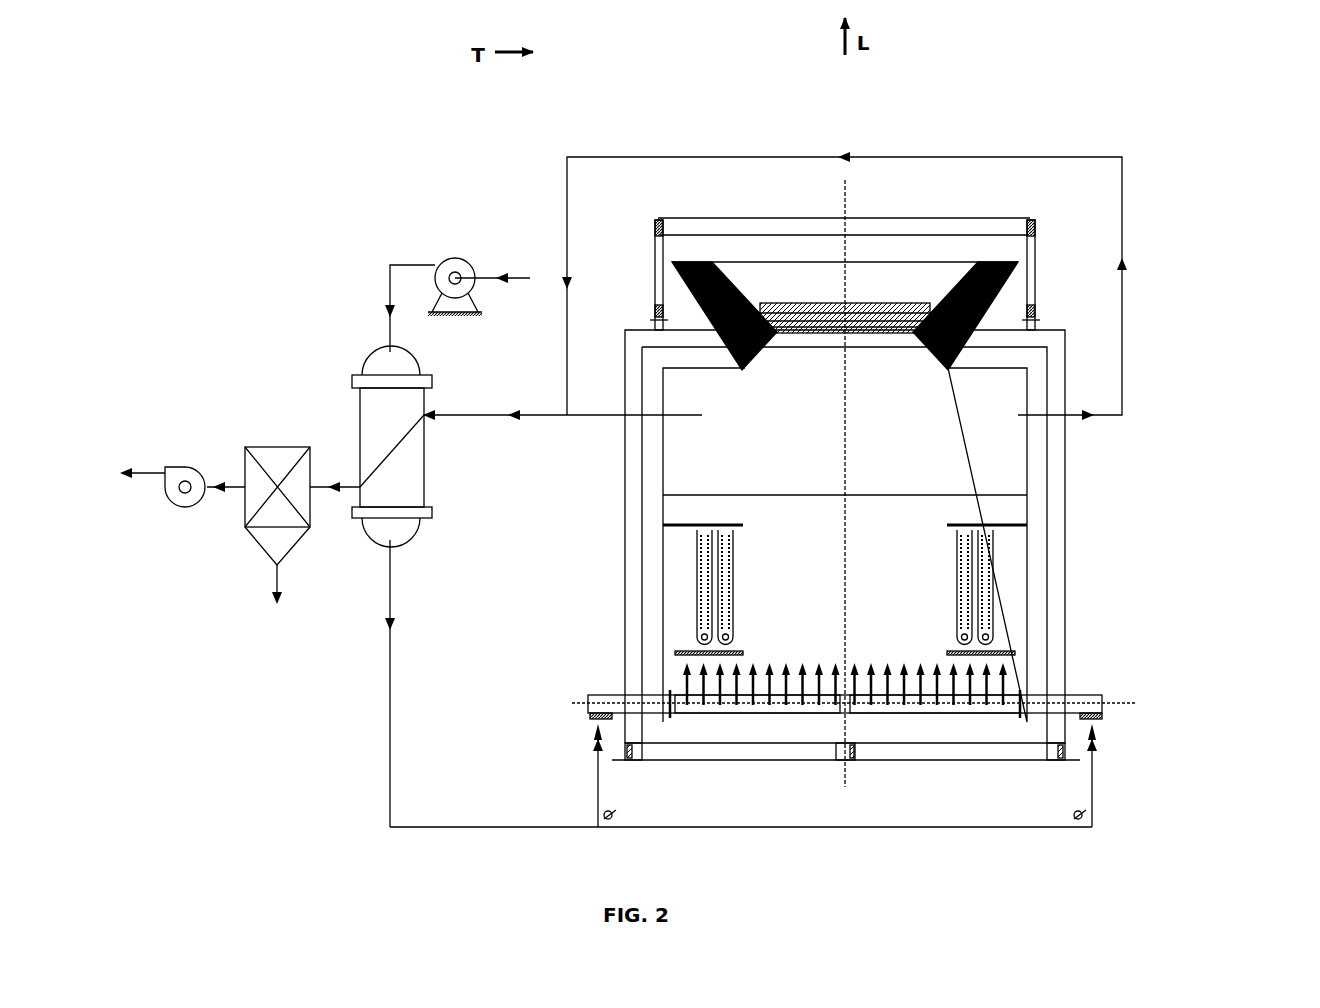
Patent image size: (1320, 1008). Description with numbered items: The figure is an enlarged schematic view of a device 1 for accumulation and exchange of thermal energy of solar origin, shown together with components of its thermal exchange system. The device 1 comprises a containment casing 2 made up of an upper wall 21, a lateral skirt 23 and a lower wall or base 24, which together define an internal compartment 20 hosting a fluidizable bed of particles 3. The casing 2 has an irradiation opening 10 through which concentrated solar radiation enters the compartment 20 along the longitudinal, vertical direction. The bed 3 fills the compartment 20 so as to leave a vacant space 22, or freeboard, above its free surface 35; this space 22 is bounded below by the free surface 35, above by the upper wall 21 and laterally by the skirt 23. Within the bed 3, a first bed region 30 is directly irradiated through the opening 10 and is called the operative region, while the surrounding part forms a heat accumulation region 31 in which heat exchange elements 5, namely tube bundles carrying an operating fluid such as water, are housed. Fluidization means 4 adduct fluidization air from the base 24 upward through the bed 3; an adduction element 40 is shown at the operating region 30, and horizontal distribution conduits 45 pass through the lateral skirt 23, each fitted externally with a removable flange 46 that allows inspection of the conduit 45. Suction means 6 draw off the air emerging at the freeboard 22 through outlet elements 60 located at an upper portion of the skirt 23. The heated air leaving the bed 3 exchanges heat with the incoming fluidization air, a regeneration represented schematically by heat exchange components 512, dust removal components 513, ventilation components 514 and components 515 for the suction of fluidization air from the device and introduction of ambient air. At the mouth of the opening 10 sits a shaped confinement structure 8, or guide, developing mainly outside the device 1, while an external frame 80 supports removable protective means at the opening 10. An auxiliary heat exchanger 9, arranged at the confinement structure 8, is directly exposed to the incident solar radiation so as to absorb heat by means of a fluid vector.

The device 1 is at (1198, 416).
The containment casing 2 is at (618, 566).
The bed of particles 3 is at (678, 606).
The fluidization means 4 is at (1120, 741).
The heat exchange elements 5 is at (990, 608).
The suction means 6 is at (1084, 398).
The confinement structure 8 is at (695, 270).
The auxiliary heat exchanger 9 is at (880, 305).
The irradiation opening 10 is at (817, 293).
The internal compartment 20 is at (750, 474).
The upper wall 21 is at (250, 160).
The vacant space 22 is at (869, 427).
The lateral skirt 23 is at (1065, 528).
The lower wall or base 24 is at (950, 757).
The first bed region 30 is at (832, 552).
The heat accumulation region 31 is at (765, 600).
The free surface 35 is at (930, 495).
The adduction element 40 is at (857, 690).
The distribution conduit 45 is at (588, 712).
The removable flange 46 is at (1102, 710).
The outlet elements 60 is at (640, 417).
The external frame 80 is at (975, 222).
The heat exchange components 512 is at (366, 429).
The fluidization air dust removal components 513 is at (258, 437).
The ventilation components 514 is at (164, 541).
The components for the suction of the fluidization air 515 is at (441, 244).